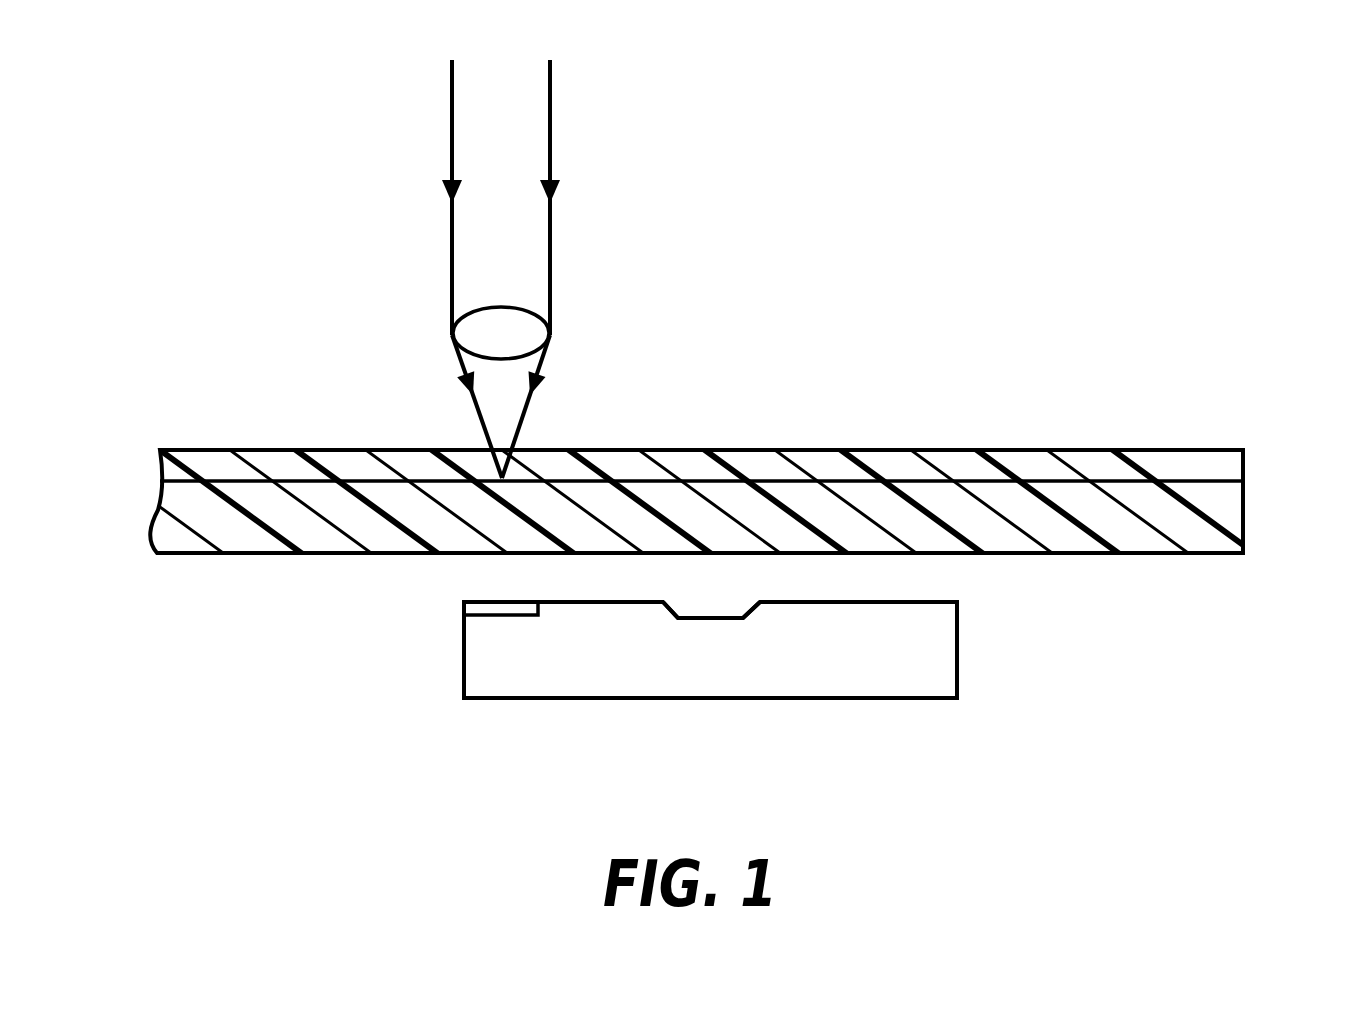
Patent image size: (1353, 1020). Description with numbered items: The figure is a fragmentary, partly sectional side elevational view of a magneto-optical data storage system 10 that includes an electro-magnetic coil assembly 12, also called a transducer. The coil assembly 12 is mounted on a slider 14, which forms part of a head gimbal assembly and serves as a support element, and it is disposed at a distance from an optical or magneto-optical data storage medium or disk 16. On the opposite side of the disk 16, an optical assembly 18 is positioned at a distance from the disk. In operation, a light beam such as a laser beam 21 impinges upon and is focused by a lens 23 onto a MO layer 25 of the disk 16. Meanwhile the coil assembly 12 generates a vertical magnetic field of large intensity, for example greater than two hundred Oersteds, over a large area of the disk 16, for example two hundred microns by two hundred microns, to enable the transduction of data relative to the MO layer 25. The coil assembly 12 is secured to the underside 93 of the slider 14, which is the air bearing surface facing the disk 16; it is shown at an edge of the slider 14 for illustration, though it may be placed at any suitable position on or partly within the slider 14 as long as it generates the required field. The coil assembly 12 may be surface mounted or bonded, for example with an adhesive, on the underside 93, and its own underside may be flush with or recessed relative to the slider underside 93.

The magneto-optical data storage system 10 is at (810, 219).
The optical assembly 18 is at (360, 304).
The laser beam 21 is at (551, 250).
The lens 23 is at (512, 342).
The MO layer 25 is at (1157, 478).
The disk 16 is at (1225, 515).
The electro-magnetic coil assembly 12 is at (480, 614).
The underside of the slider 93 is at (930, 602).
The slider 14 is at (930, 675).